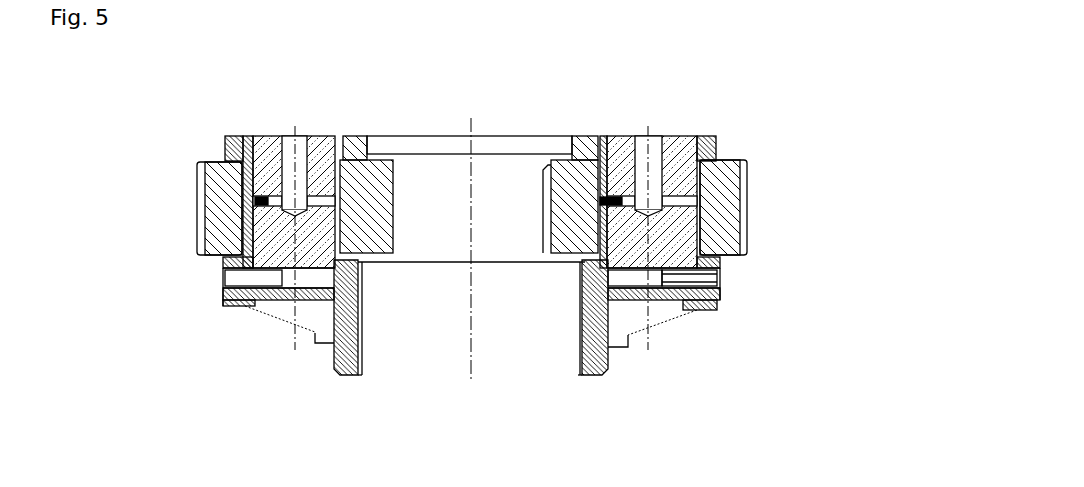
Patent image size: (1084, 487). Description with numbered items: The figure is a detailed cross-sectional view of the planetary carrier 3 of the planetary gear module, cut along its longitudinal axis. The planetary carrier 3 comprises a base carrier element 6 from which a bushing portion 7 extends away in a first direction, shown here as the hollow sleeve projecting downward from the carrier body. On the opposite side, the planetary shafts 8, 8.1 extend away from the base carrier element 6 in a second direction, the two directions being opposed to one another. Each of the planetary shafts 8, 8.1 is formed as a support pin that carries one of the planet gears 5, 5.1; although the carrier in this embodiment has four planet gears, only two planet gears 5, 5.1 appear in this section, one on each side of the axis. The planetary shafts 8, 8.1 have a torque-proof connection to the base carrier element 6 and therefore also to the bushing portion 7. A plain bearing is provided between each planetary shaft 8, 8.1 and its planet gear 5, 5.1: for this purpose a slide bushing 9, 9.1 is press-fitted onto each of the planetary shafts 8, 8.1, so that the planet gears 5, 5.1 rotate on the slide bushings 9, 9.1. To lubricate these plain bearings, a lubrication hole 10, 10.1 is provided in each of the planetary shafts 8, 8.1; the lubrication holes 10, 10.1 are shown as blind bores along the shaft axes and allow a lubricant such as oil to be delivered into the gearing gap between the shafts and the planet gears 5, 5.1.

The planetary carrier 3 is at (538, 207).
The planet gear 5 is at (710, 175).
The planet gear 5.1 is at (223, 222).
The base carrier element 6 is at (243, 298).
The bushing portion 7 is at (600, 320).
The planetary shaft 8 is at (667, 152).
The planetary shaft 8.1 is at (266, 152).
The slide bushing 9 is at (694, 150).
The slide bushing 9.1 is at (338, 152).
The lubrication hole 10 is at (651, 152).
The lubrication hole 10.1 is at (289, 152).